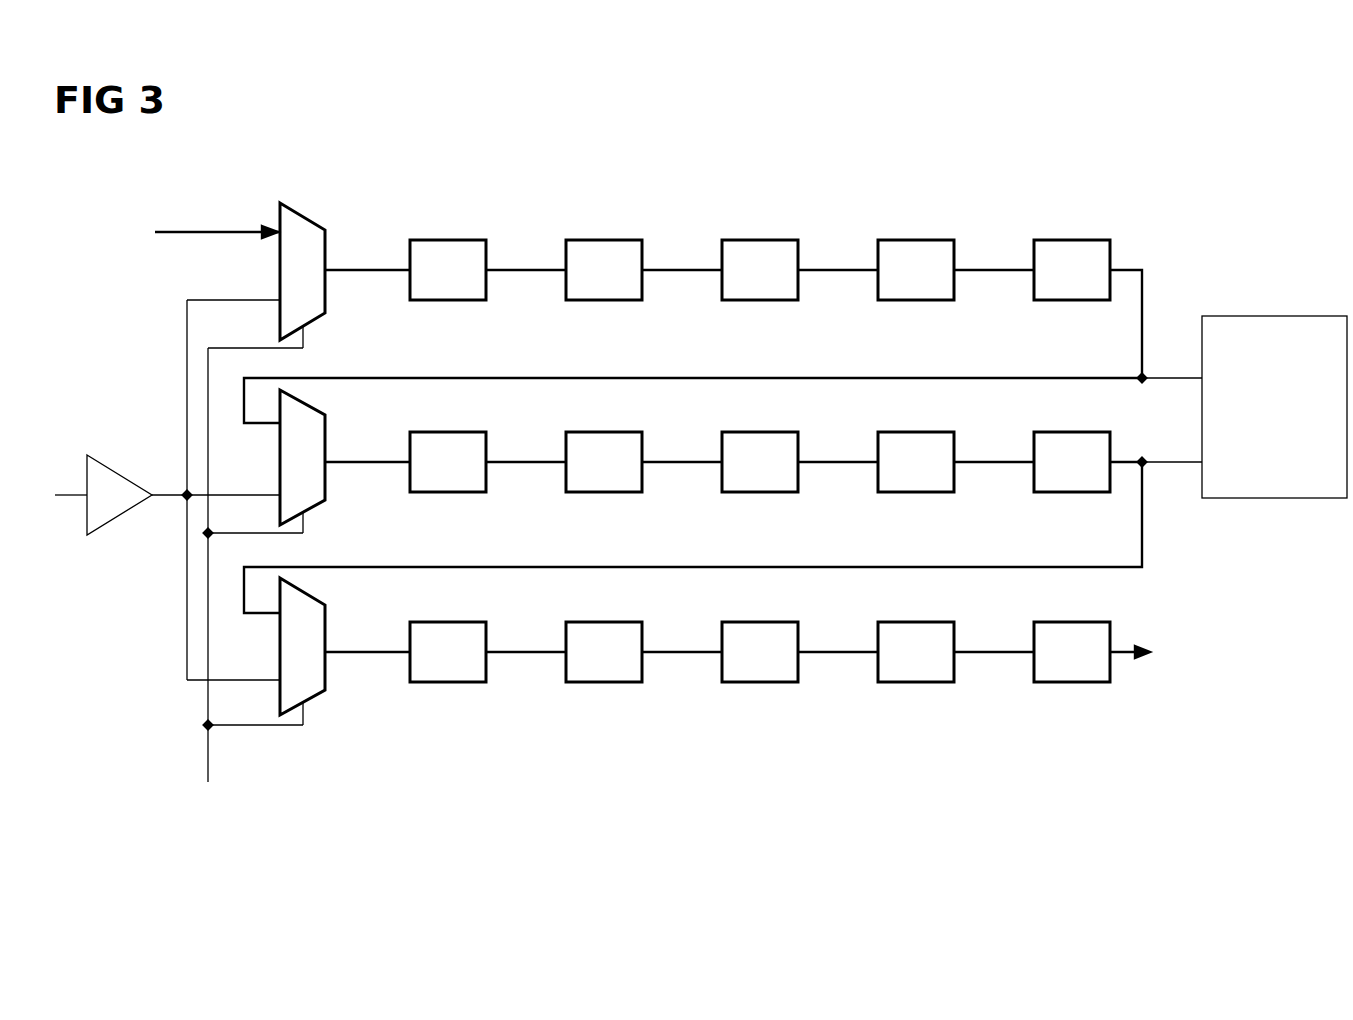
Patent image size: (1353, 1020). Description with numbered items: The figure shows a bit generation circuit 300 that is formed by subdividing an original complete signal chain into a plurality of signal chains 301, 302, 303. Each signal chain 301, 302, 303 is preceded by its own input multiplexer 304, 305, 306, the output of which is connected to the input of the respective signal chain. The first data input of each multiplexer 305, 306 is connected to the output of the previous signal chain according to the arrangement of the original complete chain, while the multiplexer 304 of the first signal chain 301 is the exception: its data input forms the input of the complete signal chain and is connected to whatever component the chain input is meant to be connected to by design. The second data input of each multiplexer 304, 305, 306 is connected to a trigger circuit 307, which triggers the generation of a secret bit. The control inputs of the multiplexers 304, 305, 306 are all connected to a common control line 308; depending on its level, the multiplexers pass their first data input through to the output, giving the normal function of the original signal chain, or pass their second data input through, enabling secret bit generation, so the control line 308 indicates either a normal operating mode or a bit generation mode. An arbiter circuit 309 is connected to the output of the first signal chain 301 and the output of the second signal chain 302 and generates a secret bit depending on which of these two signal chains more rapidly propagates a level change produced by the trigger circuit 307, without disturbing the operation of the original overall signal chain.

The bit generation circuit 300 is at (1175, 115).
The first signal chain 301 is at (1122, 250).
The second signal chain 302 is at (1085, 425).
The third signal chain 303 is at (1120, 635).
The multiplexer 304 is at (312, 212).
The multiplexer 305 is at (320, 412).
The multiplexer 306 is at (318, 600).
The trigger circuit 307 is at (100, 455).
The control line 308 is at (210, 765).
The arbiter circuit 309 is at (1265, 316).